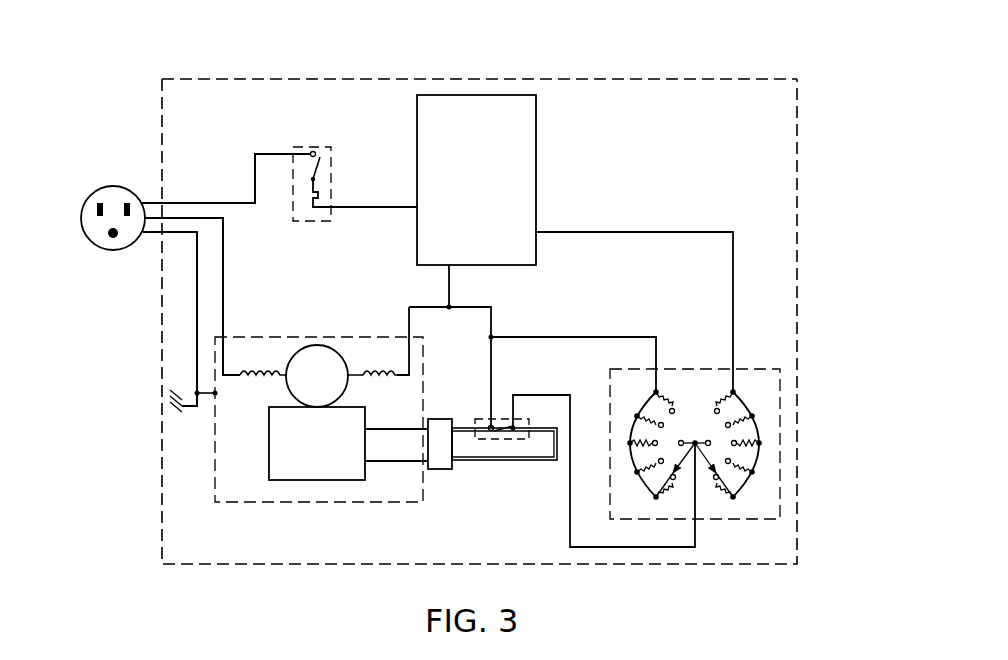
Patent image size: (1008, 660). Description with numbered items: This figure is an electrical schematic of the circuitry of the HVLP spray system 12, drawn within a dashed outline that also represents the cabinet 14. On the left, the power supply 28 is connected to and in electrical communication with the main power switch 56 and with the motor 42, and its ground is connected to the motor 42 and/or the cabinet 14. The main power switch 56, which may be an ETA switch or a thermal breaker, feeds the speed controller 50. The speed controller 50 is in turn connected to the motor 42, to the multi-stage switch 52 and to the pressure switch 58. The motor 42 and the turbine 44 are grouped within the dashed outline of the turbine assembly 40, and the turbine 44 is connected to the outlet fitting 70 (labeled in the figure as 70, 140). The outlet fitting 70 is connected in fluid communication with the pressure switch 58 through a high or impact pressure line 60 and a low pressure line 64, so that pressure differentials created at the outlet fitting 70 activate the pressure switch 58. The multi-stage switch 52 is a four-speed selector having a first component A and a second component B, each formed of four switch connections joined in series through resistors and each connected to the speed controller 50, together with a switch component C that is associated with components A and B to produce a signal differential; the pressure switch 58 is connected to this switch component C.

The HVLP spray system 12 is at (188, 76).
The cabinet 14 is at (735, 79).
The power supply 28 is at (118, 186).
The turbine assembly 40 is at (215, 480).
The motor 42 is at (318, 345).
The turbine 44 is at (294, 480).
The speed controller 50 is at (537, 126).
The multi-stage switch 52 is at (760, 369).
The main power switch 56 is at (313, 147).
The pressure switch 58 is at (503, 419).
The high pressure line 60 is at (458, 427).
The low pressure line 64 is at (540, 460).
The outlet fitting 70 is at (382, 498).
The coupling 140 is at (439, 474).
The first component A is at (656, 392).
The second component B is at (733, 392).
The switch component C is at (697, 445).